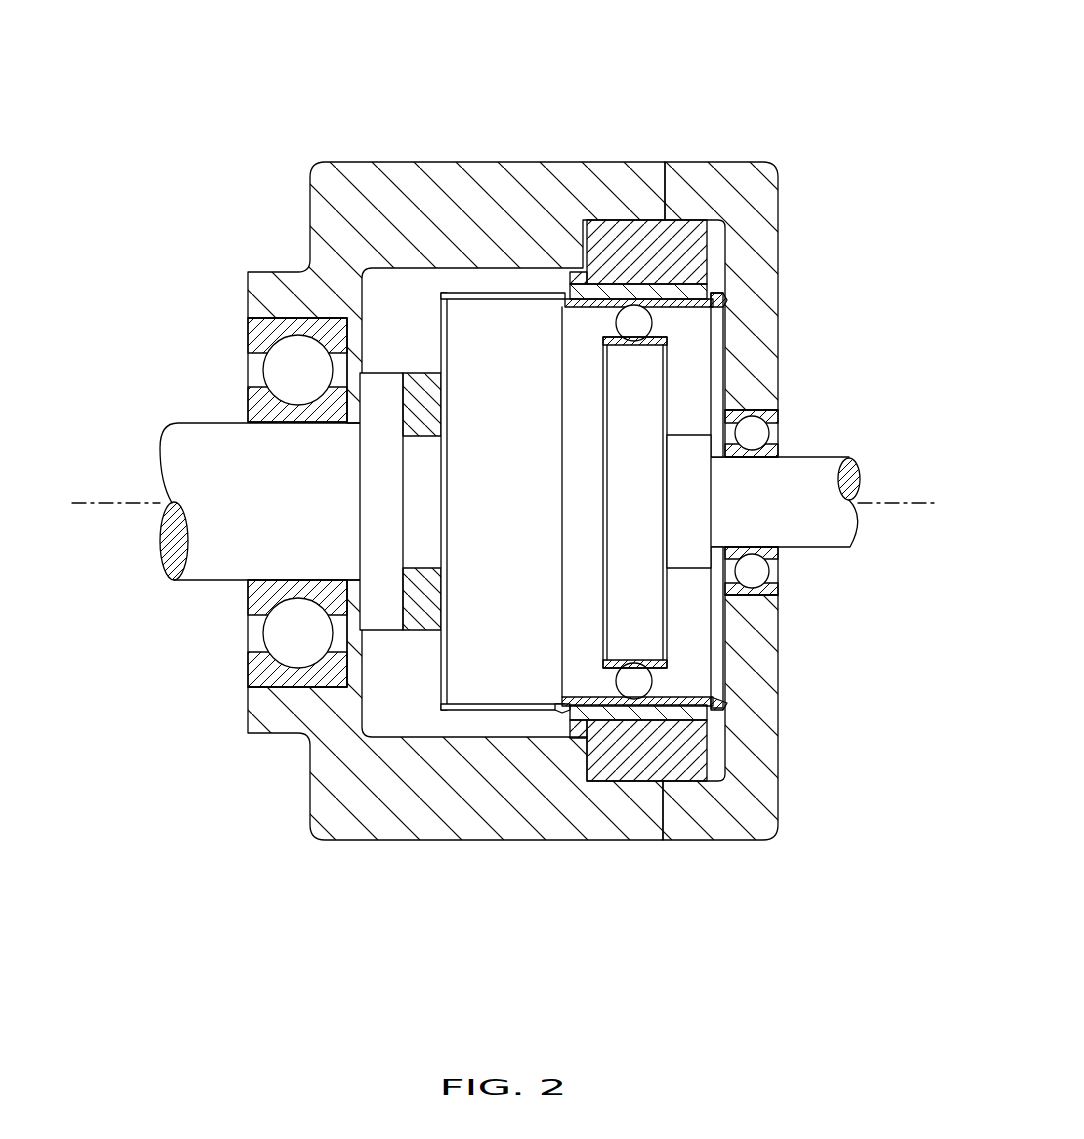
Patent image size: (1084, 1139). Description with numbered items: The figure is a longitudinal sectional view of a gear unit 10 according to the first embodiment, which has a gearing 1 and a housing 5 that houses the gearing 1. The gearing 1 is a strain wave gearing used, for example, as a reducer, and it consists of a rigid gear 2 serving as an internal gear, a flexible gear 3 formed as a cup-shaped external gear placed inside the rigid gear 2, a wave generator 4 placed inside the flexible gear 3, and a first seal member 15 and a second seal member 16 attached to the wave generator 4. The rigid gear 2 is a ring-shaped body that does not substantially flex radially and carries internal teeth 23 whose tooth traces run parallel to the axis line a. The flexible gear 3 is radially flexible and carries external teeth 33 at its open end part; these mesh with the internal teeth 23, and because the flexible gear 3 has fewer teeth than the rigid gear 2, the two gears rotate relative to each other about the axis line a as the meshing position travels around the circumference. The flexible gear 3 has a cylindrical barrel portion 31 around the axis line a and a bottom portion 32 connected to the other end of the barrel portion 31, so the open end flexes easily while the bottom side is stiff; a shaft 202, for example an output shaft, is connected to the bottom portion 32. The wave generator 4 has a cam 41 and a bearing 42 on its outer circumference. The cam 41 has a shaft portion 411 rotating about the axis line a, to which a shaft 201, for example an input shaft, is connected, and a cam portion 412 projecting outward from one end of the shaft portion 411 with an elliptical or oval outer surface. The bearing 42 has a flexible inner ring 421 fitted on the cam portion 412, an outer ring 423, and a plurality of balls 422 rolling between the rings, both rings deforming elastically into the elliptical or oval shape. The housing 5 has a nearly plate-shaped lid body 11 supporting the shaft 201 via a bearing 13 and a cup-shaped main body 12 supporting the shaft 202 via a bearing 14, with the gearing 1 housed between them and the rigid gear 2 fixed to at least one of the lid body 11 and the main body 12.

The gear unit 10 is at (829, 90).
The housing 5 is at (754, 160).
The lid body 11 is at (770, 200).
The main body 12 is at (318, 168).
The bearing 14 is at (256, 336).
The bearing 13 is at (781, 412).
The shaft 202 is at (205, 448).
The shaft 201 is at (812, 470).
The axis line a is at (913, 503).
The gearing 1 is at (420, 288).
The flexible gear 3 is at (502, 294).
The barrel portion 31 is at (483, 712).
The bottom portion 32 is at (440, 670).
The first seal member 15 is at (727, 712).
The second seal member 16 is at (583, 708).
The wave generator 4 is at (672, 393).
The cam 41 is at (855, 625).
The shaft portion 411 is at (687, 555).
The cam portion 412 is at (650, 612).
The rigid gear 2 is at (630, 215).
The internal teeth 23 is at (600, 290).
The external teeth 33 is at (657, 290).
The bearing 42 is at (598, 903).
The inner ring 421 is at (683, 703).
The balls 422 is at (648, 705).
The outer ring 423 is at (587, 715).